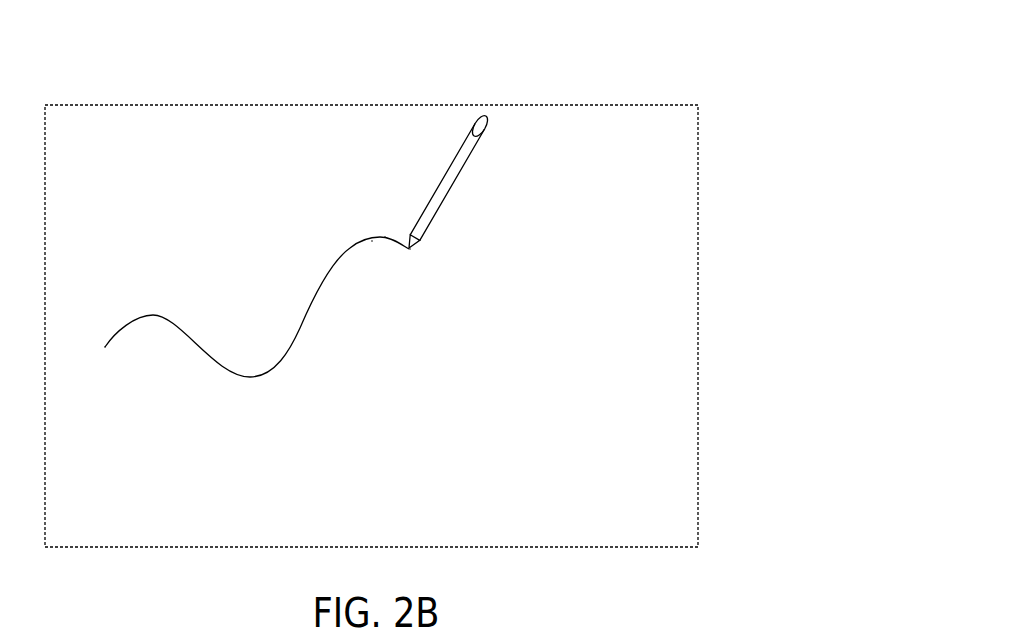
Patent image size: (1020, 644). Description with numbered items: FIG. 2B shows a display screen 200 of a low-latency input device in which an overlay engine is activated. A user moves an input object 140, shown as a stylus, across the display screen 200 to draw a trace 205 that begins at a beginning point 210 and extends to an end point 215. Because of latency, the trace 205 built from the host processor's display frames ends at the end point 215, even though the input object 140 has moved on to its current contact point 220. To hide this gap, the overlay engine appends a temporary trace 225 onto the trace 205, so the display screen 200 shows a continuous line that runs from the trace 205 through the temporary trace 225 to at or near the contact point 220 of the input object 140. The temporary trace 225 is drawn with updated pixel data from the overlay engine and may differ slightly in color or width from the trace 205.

The display screen 200 is at (582, 105).
The trace 205 is at (180, 315).
The beginning point 210 is at (103, 355).
The end point 215 is at (372, 242).
The contact point 220 is at (414, 256).
The temporary trace 225 is at (391, 233).
The input object 140 is at (469, 157).